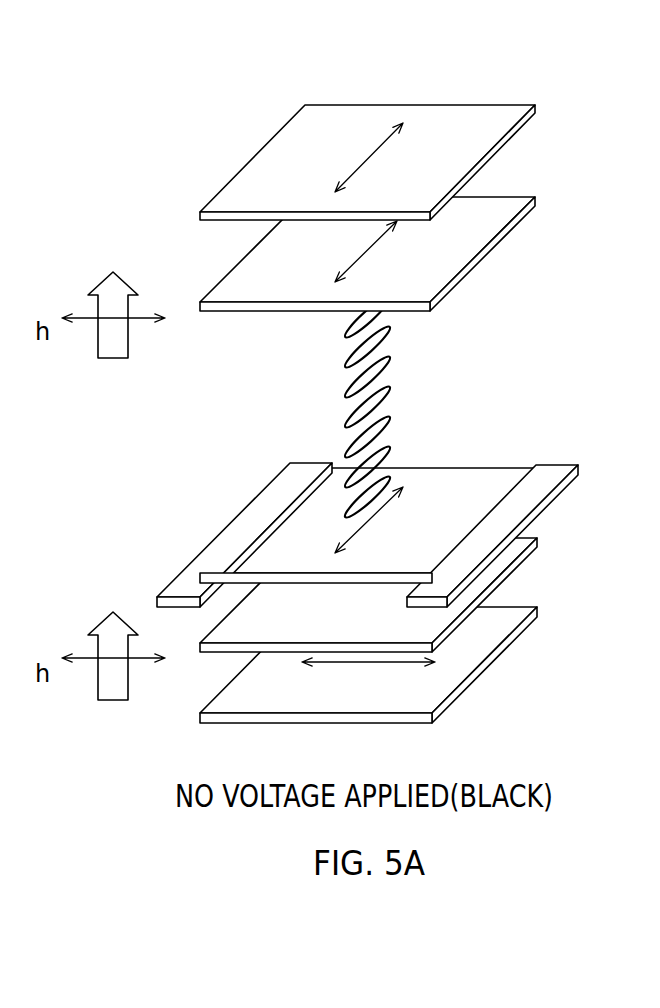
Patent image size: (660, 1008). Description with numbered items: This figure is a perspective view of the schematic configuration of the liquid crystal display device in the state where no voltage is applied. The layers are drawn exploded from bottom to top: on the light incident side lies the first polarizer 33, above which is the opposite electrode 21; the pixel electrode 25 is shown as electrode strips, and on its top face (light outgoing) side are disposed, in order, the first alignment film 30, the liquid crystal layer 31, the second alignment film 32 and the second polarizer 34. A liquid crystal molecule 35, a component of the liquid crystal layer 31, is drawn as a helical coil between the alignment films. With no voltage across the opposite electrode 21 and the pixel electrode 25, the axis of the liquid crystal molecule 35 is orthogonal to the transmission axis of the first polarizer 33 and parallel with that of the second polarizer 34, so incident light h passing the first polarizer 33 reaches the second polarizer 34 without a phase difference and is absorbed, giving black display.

The opposite electrode 21 is at (478, 583).
The pixel electrode 25 is at (253, 513).
The first alignment film 30 is at (391, 514).
The liquid crystal layer 31 is at (486, 350).
The second alignment film 32 is at (488, 227).
The first polarizer 33 is at (487, 633).
The second polarizer 34 is at (487, 137).
The liquid crystal molecule 35 is at (392, 382).